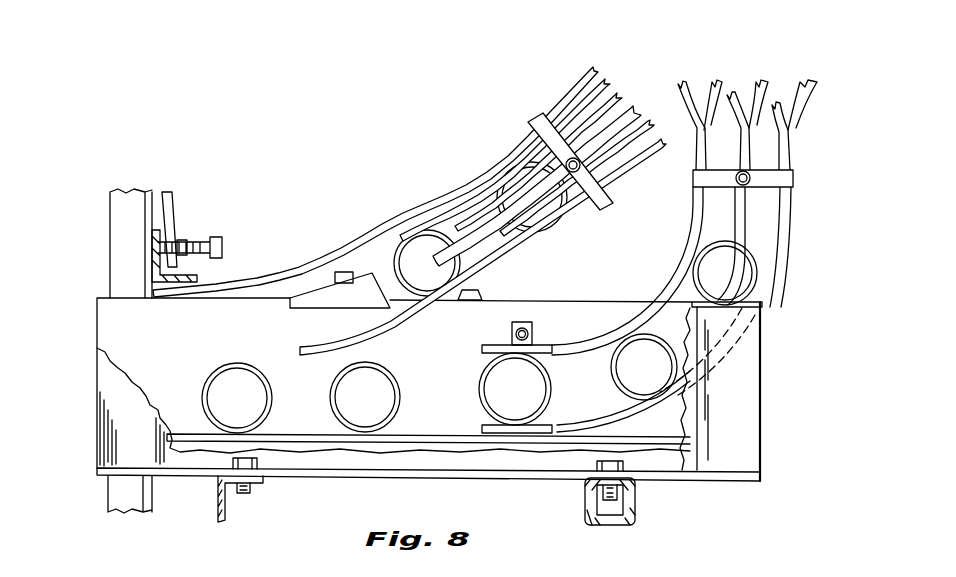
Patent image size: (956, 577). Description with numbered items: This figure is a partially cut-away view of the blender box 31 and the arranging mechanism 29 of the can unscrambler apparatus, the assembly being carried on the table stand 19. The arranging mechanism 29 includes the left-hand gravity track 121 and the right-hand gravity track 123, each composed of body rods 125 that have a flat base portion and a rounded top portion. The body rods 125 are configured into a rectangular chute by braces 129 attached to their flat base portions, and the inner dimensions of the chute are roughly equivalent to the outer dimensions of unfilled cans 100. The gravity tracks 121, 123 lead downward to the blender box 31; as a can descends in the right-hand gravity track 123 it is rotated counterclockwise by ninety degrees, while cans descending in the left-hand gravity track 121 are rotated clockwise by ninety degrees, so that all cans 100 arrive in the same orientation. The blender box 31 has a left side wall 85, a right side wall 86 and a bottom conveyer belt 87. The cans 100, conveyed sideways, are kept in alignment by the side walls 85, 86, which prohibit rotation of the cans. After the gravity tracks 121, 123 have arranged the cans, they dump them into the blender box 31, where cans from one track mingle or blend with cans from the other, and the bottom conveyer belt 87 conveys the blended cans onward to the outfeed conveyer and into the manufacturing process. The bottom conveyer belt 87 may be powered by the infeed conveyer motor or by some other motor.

The table stand 19 is at (135, 200).
The arranging mechanism 29 is at (646, 72).
The blender box 31 is at (745, 432).
The left side wall 85 is at (747, 380).
The right side wall 86 is at (604, 316).
The bottom conveyer belt 87 is at (471, 438).
The cans 100 is at (414, 243).
The left-hand gravity track 121 is at (490, 168).
The right-hand gravity track 123 is at (785, 233).
The body rods 125 is at (297, 268).
The braces 129 is at (793, 177).